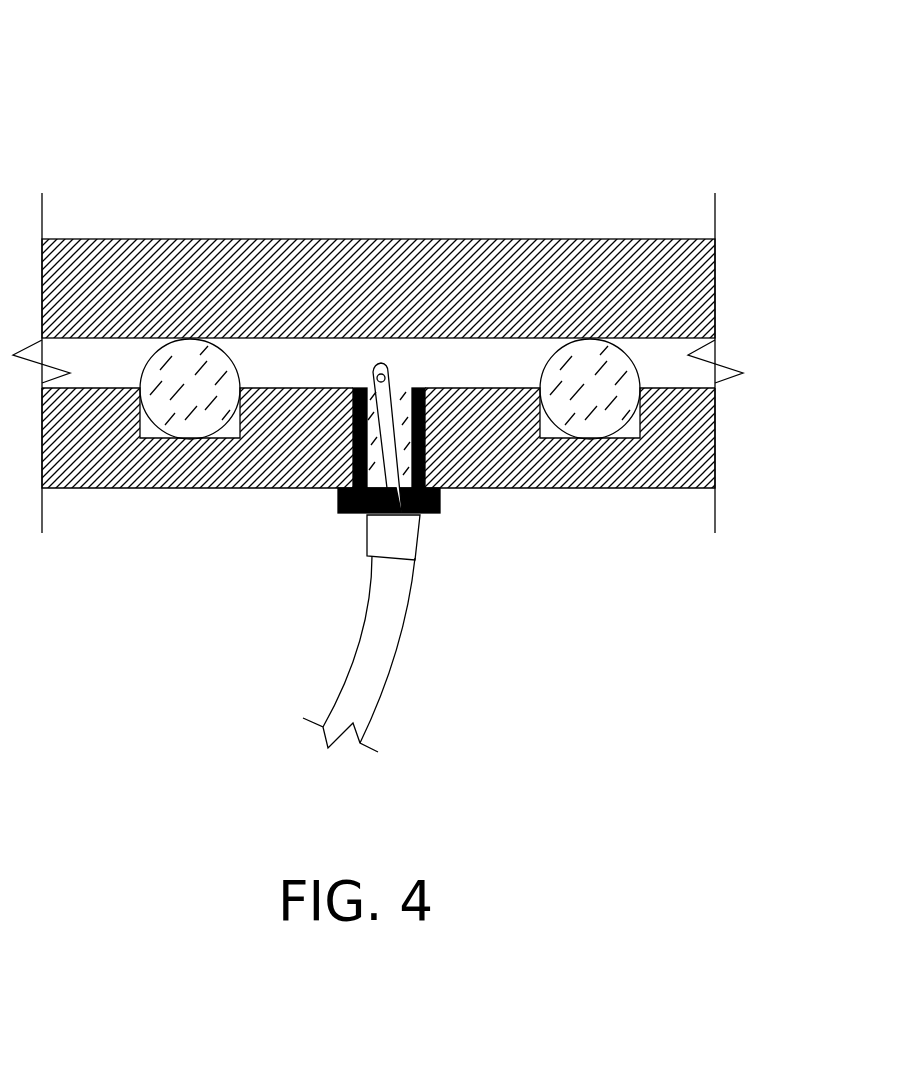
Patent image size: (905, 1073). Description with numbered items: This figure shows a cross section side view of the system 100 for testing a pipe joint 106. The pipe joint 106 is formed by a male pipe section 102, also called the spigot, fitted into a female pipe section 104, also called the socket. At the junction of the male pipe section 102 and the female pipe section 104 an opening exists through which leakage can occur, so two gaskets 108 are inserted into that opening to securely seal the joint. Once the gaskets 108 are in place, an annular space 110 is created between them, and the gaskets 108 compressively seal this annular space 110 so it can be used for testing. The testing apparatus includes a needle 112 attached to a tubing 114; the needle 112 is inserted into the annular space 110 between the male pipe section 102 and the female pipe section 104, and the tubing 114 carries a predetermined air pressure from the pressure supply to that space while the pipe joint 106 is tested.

The system 100 is at (238, 64).
The male pipe section 102 is at (108, 488).
The female pipe section 104 is at (462, 238).
The pipe joint 106 is at (337, 517).
The gaskets 108 is at (148, 365).
The annular space 110 is at (325, 365).
The needle 112 is at (425, 440).
The tubing 114 is at (395, 632).